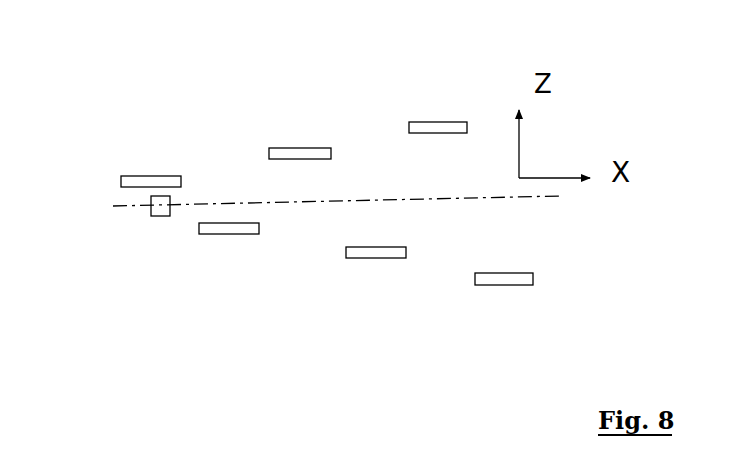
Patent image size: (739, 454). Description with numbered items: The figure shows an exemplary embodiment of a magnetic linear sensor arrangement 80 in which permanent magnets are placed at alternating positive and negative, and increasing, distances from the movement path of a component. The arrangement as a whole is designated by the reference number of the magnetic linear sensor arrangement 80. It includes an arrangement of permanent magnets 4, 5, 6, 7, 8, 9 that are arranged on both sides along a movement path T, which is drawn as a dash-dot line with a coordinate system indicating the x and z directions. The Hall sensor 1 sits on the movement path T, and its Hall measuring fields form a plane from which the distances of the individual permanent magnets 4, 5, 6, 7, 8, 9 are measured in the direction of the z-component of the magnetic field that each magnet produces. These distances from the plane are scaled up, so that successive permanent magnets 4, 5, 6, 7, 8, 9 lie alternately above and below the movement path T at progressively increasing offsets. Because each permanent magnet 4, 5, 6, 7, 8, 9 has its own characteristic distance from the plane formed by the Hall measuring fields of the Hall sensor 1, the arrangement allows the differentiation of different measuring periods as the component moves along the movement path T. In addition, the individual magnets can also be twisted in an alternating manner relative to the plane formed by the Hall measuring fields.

The magnetic linear sensor arrangement 80 is at (140, 96).
The Hall sensor 1 is at (163, 207).
The permanent magnet 4 is at (135, 175).
The permanent magnet 5 is at (223, 223).
The permanent magnet 6 is at (282, 148).
The permanent magnet 7 is at (377, 258).
The permanent magnet 8 is at (425, 135).
The permanent magnet 9 is at (510, 285).
The movement path T is at (455, 198).